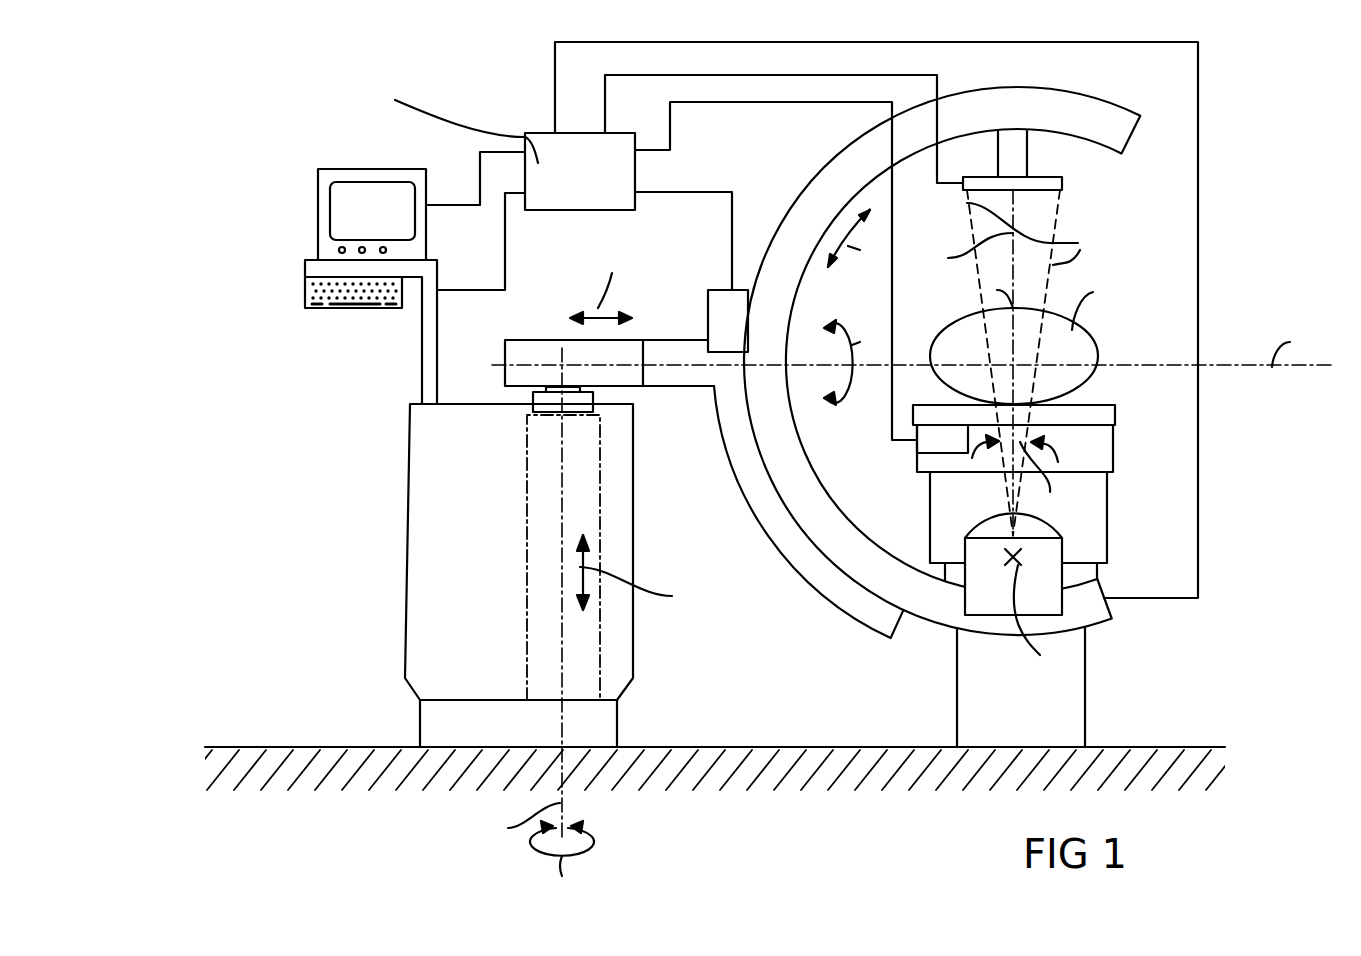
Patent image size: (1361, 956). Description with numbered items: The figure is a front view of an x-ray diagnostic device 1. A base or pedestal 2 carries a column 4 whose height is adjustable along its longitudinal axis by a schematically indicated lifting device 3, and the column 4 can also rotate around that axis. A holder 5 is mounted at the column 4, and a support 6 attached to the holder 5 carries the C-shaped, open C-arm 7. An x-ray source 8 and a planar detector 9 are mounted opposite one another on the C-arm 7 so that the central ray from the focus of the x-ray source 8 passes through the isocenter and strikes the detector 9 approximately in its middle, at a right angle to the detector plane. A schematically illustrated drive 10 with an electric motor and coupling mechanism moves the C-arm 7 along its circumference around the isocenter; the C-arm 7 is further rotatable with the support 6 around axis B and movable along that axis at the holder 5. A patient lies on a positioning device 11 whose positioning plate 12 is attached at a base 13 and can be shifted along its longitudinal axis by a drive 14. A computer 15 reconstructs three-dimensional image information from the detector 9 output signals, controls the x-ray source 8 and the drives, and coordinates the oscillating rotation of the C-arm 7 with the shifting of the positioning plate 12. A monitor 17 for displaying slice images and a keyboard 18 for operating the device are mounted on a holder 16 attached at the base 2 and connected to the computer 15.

The x-ray diagnostic device 1 is at (397, 500).
The base 2 is at (437, 580).
The lifting device 3 is at (540, 653).
The column 4 is at (592, 398).
The holder 5 is at (518, 340).
The support 6 is at (657, 340).
The C-arm 7 is at (843, 172).
The x-ray source 8 is at (1047, 555).
The detector 9 is at (1062, 183).
The drive 10 is at (742, 300).
The positioning device 11 is at (1130, 522).
The positioning plate 12 is at (1105, 413).
The base 13 is at (1073, 687).
The drive 14 is at (940, 430).
The computer 15 is at (550, 145).
The holder 16 is at (422, 340).
The monitor 17 is at (318, 207).
The keyboard 18 is at (305, 302).